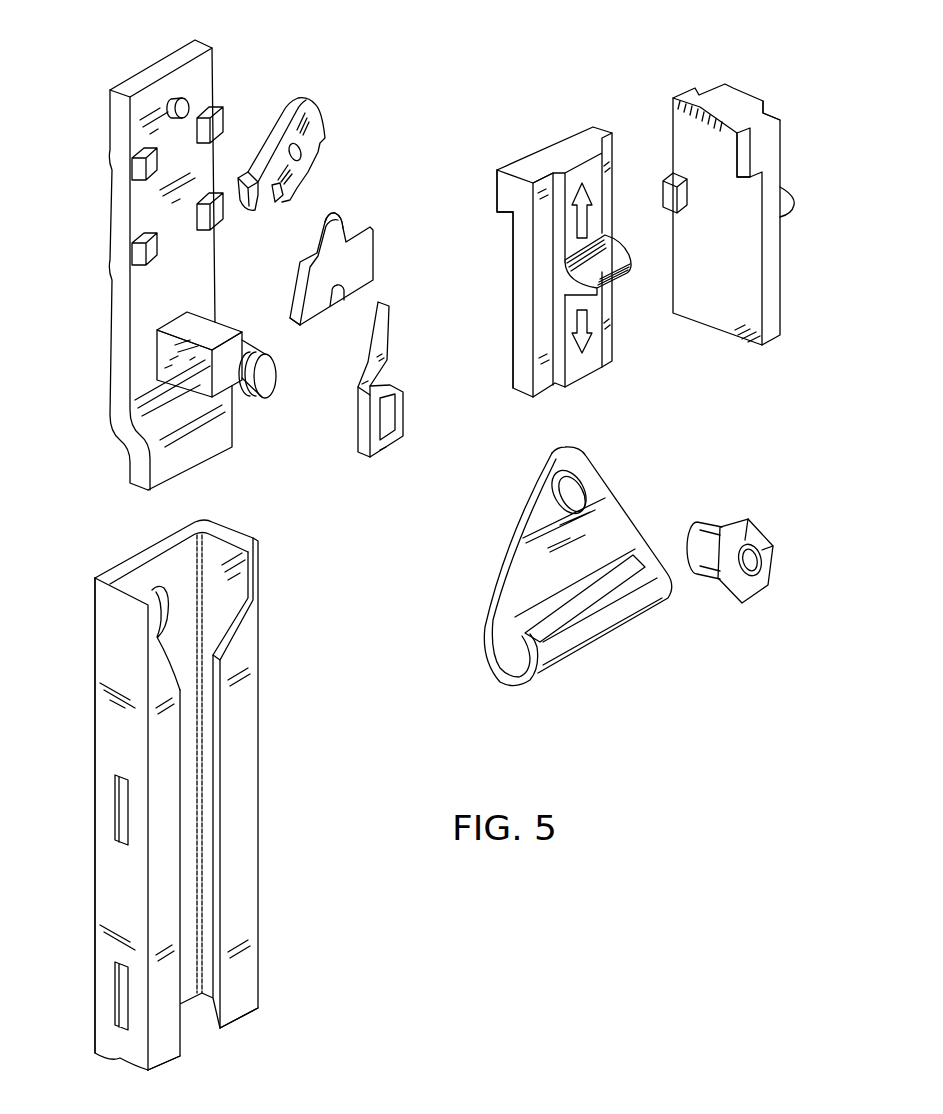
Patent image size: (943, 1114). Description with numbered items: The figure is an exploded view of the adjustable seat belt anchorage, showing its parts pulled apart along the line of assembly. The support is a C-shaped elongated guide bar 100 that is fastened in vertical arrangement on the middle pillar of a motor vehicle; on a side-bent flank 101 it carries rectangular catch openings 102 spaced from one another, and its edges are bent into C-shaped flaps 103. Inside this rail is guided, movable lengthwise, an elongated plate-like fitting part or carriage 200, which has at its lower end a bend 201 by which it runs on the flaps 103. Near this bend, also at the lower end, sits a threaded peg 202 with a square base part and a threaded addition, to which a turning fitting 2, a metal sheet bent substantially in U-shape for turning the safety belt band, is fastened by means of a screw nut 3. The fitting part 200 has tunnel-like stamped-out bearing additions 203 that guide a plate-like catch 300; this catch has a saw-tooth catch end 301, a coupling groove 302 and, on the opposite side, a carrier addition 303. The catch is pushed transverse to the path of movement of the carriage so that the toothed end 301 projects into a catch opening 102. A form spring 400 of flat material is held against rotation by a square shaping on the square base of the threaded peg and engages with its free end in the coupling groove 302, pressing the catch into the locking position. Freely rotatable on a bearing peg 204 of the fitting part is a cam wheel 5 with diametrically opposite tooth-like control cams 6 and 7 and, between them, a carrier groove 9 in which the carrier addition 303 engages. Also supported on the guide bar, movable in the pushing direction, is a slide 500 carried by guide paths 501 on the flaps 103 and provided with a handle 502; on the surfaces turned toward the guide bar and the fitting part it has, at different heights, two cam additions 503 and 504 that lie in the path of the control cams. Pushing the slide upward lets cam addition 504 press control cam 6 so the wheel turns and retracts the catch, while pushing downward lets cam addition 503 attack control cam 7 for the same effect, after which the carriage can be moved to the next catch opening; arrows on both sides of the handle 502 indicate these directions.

The fitting part 200 is at (176, 60).
The bend 201 is at (228, 432).
The threaded peg 202 is at (226, 332).
The bearing additions 203 is at (217, 124).
The bearing peg 204 is at (203, 88).
The cam wheel 5 is at (289, 158).
The control cam 6 is at (314, 152).
The control cam 7 is at (248, 177).
The carrier groove 9 is at (273, 199).
The catch 300 is at (361, 274).
The saw-tooth catch end 301 is at (293, 322).
The coupling groove 302 is at (338, 306).
The carrier addition 303 is at (336, 212).
The form spring 400 is at (398, 405).
The slide 500 is at (649, 213).
The guide paths 501 is at (607, 190).
The handle 502 is at (622, 274).
The cam addition 503 is at (505, 162).
The cam addition 504 is at (667, 206).
The turning fitting 2 is at (618, 514).
The screw nut 3 is at (762, 530).
The guide bar 100 is at (192, 803).
The flank 101 is at (110, 622).
The catch openings 102 is at (117, 812).
The flaps 103 is at (170, 1045).